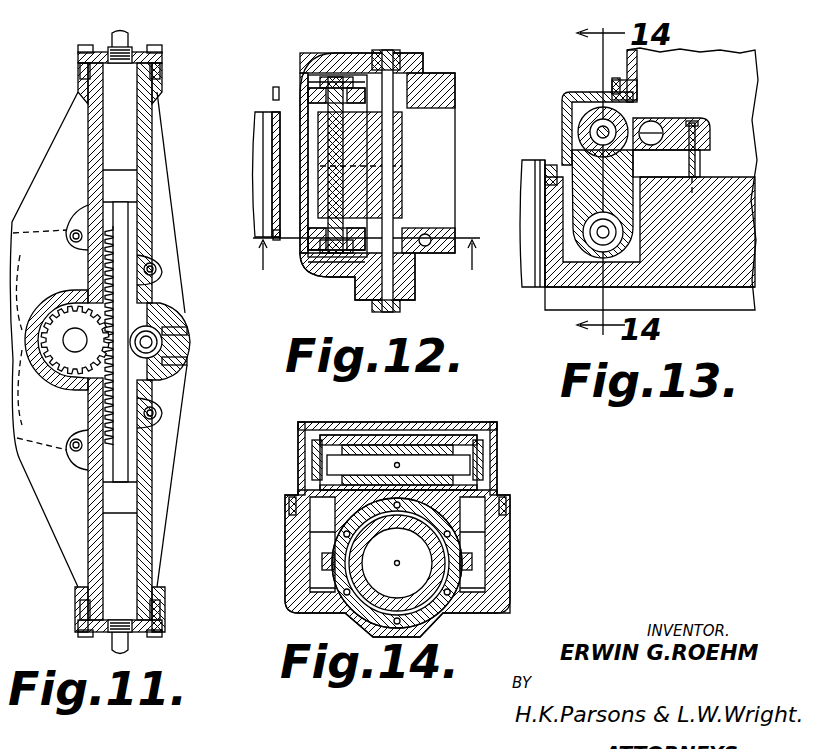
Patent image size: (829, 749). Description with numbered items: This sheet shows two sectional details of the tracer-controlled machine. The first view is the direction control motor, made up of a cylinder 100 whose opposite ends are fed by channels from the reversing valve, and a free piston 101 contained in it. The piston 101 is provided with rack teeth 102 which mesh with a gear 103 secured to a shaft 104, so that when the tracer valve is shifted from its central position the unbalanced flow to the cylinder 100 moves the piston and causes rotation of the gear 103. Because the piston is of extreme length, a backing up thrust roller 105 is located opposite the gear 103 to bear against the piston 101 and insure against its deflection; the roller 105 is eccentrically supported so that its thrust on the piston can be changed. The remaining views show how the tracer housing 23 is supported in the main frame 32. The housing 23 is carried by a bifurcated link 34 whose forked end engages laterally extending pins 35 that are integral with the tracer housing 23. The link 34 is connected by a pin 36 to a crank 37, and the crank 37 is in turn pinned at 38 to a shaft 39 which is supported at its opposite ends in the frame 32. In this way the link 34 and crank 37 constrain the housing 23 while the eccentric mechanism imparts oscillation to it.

In FIG. 11, the cylinder 100 is at (147, 114).
In FIG. 11, the free piston 101 is at (127, 187).
In FIG. 11, the rack teeth 102 is at (115, 242).
In FIG. 11, the gear 103 is at (63, 318).
In FIG. 11, the shaft 104 is at (73, 348).
In FIG. 11, the backing up thrust roller 105 is at (168, 318).
In FIG. 12, the tracer housing 23 is at (263, 115).
In FIG. 13, the tracer housing 23 is at (525, 188).
In FIG. 14, the tracer housing 23 is at (440, 613).
In FIG. 12, the main frame 32 is at (307, 66).
In FIG. 13, the main frame 32 is at (718, 193).
In FIG. 14, the main frame 32 is at (285, 530).
In FIG. 12, the bifurcated link 34 is at (310, 97).
In FIG. 13, the bifurcated link 34 is at (580, 158).
In FIG. 14, the bifurcated link 34 is at (480, 493).
In FIG. 13, the laterally extending pins 35 is at (597, 230).
In FIG. 14, the laterally extending pins 35 is at (327, 563).
In FIG. 12, the pin 36 is at (335, 145).
In FIG. 13, the pin 36 is at (583, 123).
In FIG. 14, the pin 36 is at (477, 438).
In FIG. 12, the crank 37 is at (320, 185).
In FIG. 13, the crank 37 is at (638, 120).
In FIG. 14, the crank 37 is at (352, 448).
In FIG. 12, the pin 38 is at (402, 167).
In FIG. 13, the pin 38 is at (666, 163).
In FIG. 12, the shaft 39 is at (390, 213).
In FIG. 13, the shaft 39 is at (655, 127).